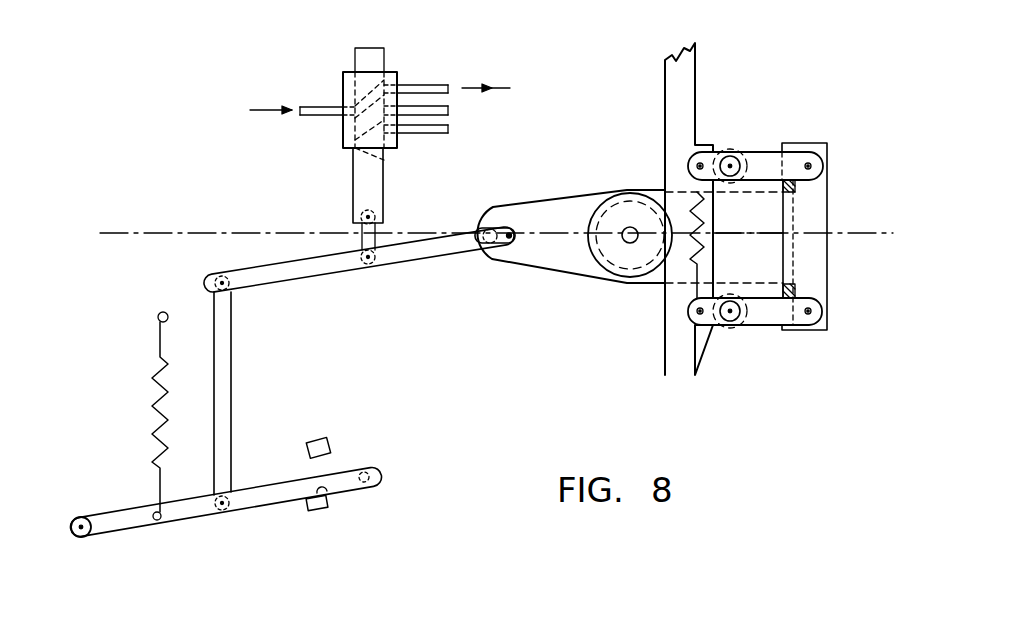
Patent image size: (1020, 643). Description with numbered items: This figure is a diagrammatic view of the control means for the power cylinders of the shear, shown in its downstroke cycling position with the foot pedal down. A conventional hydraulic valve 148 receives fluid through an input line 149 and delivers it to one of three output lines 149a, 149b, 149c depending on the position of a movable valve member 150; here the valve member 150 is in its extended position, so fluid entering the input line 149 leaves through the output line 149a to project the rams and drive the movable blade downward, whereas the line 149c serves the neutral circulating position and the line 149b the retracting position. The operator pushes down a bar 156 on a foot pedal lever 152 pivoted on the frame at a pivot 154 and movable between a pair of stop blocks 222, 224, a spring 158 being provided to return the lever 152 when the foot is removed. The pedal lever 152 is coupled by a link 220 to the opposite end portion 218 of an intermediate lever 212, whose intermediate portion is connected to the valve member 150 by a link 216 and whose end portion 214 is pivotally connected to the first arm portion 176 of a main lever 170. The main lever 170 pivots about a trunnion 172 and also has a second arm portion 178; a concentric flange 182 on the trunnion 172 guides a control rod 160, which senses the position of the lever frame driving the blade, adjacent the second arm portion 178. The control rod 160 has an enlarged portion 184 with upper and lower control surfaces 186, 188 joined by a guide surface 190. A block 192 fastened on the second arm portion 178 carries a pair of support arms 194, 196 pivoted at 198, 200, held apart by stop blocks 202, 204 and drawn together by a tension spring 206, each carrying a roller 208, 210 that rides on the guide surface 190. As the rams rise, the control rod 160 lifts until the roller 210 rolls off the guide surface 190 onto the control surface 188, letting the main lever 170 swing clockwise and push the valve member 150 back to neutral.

The hydraulic valve 148 is at (345, 60).
The input line 149 is at (320, 105).
The output line 149a is at (449, 86).
The output line 149b is at (450, 132).
The output line 149c is at (450, 110).
The valve member 150 is at (375, 190).
The foot pedal lever 152 is at (270, 495).
The pivot 154 is at (377, 477).
The bar 156 is at (80, 516).
The spring 158 is at (157, 393).
The control rod 160 is at (665, 72).
The main lever 170 is at (582, 213).
The trunnion 172 is at (627, 244).
The first arm portion 176 is at (504, 224).
The second arm portion 178 is at (758, 226).
The concentric flange 182 is at (607, 258).
The enlarged portion 184 is at (777, 80).
The upper control surface 186 is at (701, 148).
The lower control surface 188 is at (703, 327).
The guide surface 190 is at (706, 240).
The block 192 is at (820, 215).
The support arm 194 is at (763, 163).
The support arm 196 is at (763, 314).
The pivotal connection 198 is at (809, 167).
The pivotal connection 200 is at (812, 313).
The stop block 202 is at (796, 193).
The stop block 204 is at (797, 289).
The tension spring 206 is at (672, 192).
The roller 208 is at (731, 149).
The roller 210 is at (732, 329).
The intermediate lever 212 is at (317, 268).
The end portion 214 is at (492, 245).
The link 216 is at (358, 250).
The opposite end portion 218 is at (240, 277).
The link 220 is at (228, 397).
The stop block 222 is at (328, 456).
The stop block 224 is at (331, 495).